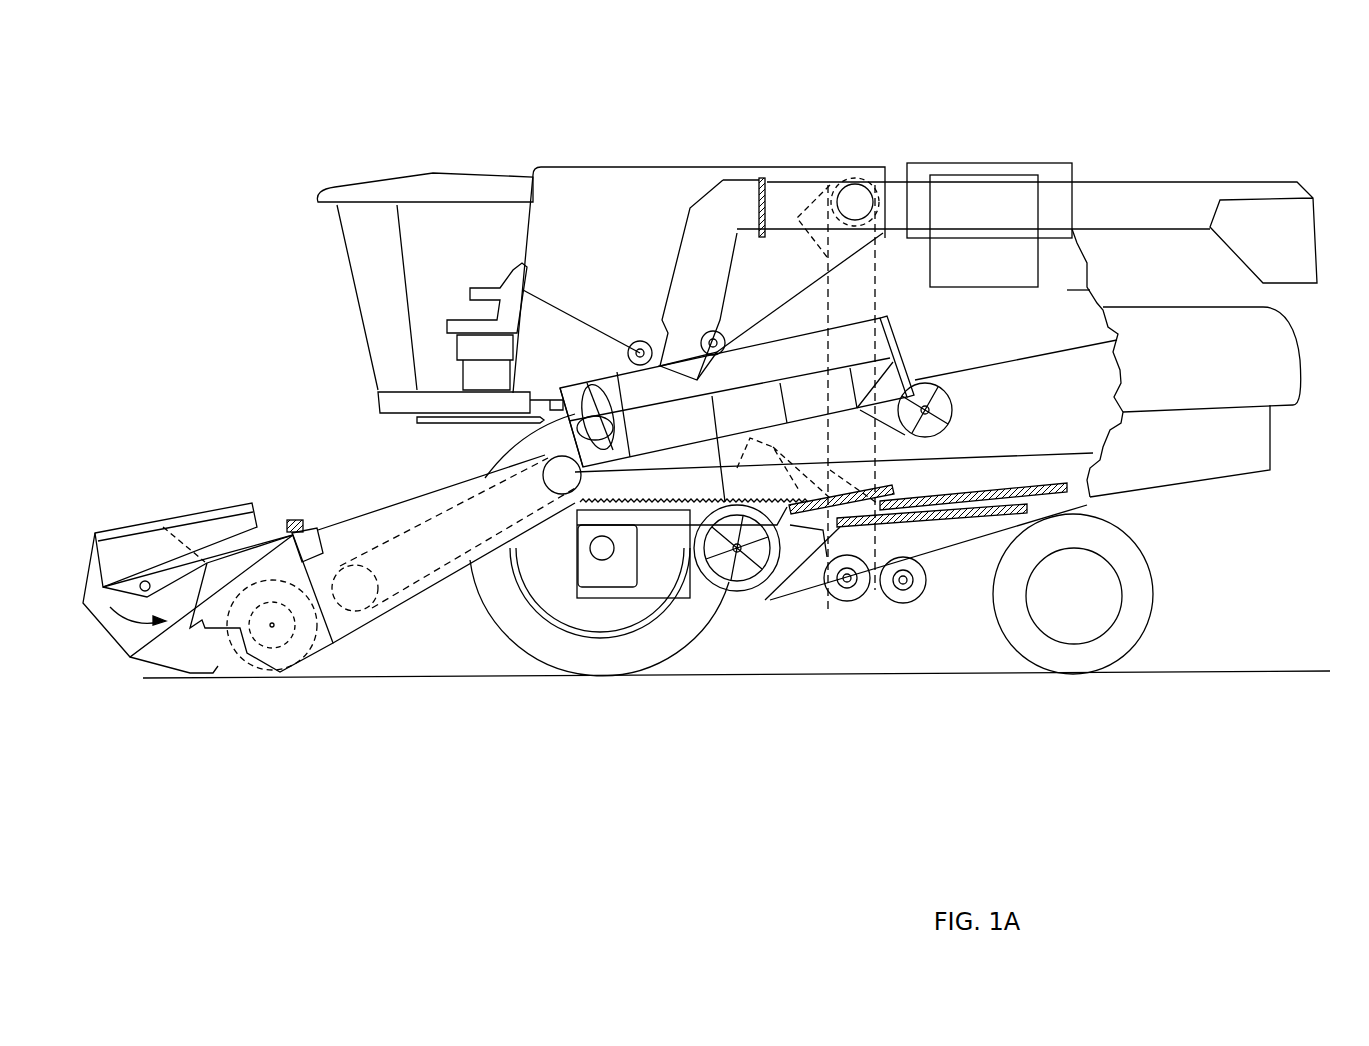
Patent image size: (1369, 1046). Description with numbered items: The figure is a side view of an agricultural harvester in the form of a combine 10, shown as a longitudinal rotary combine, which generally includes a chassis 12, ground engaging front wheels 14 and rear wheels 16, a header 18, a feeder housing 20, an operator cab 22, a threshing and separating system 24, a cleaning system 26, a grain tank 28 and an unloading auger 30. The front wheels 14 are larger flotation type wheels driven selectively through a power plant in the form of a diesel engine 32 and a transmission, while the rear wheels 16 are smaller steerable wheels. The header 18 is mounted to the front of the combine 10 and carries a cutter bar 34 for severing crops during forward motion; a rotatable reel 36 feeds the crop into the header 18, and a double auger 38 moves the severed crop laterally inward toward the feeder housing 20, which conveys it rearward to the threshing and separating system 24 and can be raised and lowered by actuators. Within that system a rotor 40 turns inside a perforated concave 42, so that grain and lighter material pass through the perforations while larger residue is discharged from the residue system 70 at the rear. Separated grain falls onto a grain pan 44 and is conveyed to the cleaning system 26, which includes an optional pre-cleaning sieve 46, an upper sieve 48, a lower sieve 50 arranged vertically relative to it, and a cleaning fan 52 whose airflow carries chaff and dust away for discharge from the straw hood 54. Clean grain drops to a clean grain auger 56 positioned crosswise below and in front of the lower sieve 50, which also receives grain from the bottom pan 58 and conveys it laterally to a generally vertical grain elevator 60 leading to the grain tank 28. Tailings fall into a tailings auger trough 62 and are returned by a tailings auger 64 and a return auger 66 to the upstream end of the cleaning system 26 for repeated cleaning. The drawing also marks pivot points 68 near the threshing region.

The combine 10 is at (415, 152).
The chassis 12 is at (1090, 510).
The front wheels 14 is at (503, 632).
The rear wheels 16 is at (1153, 610).
The header 18 is at (175, 493).
The feeder housing 20 is at (390, 500).
The operator cab 22 is at (352, 275).
The threshing and separating system 24 is at (497, 440).
The cleaning system 26 is at (798, 612).
The grain tank 28 is at (590, 173).
The unloading auger 30 is at (1168, 185).
The diesel engine 32 is at (975, 170).
The cutter bar 34 is at (218, 670).
The reel 36 is at (95, 565).
The double auger 38 is at (273, 630).
The rotor 40 is at (583, 387).
The concave 42 is at (777, 370).
The grain pan 44 is at (573, 520).
The pre-cleaning sieve 46 is at (893, 489).
The upper sieve 48 is at (985, 490).
The lower sieve 50 is at (957, 523).
The cleaning fan 52 is at (736, 592).
The straw hood 54 is at (1282, 348).
The clean grain auger 56 is at (848, 602).
The bottom pan 58 is at (1010, 523).
The grain elevator 60 is at (878, 293).
The tailings auger trough 62 is at (987, 530).
The tailings auger 64 is at (903, 604).
The return auger 66 is at (807, 461).
The pivot points 68 is at (635, 343).
The residue system 70 is at (1243, 490).